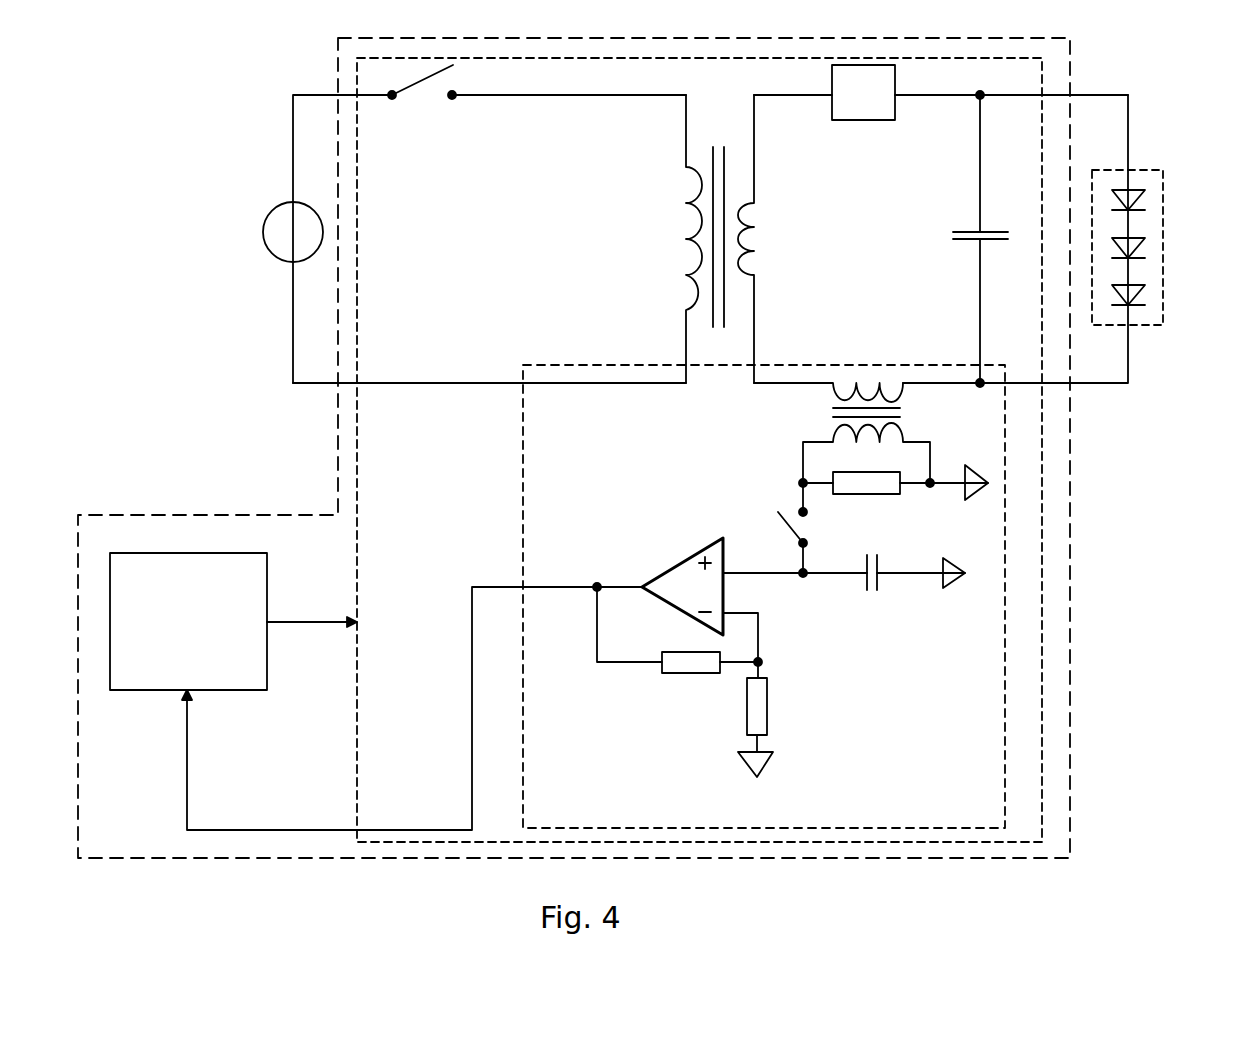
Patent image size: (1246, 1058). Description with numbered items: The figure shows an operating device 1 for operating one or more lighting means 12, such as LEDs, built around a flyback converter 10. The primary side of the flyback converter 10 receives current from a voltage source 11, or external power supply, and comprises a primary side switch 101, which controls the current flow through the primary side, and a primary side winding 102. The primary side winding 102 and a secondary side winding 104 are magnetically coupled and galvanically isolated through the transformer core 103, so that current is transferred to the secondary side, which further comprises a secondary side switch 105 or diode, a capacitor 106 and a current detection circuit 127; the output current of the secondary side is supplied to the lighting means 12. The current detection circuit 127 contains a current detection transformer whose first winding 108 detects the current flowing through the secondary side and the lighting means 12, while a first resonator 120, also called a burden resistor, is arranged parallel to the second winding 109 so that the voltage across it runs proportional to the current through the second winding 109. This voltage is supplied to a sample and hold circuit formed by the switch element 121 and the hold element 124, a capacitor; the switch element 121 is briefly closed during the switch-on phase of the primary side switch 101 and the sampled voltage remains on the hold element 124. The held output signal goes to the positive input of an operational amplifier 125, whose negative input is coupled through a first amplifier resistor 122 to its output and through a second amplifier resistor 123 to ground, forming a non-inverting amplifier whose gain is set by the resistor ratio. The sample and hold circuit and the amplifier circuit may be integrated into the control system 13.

The operating device 1 is at (1070, 75).
The flyback converter 10 is at (357, 167).
The voltage source 11 is at (263, 230).
The lighting means 12 is at (1128, 170).
The control system 13 is at (155, 690).
The primary side switch 101 is at (402, 95).
The primary side winding 102 is at (700, 180).
The transformer core 103 is at (720, 138).
The secondary side winding 104 is at (755, 223).
The secondary side switch 105 is at (847, 120).
The capacitor 106 is at (965, 237).
The first winding 108 is at (833, 387).
The second winding 109 is at (833, 430).
The first resonator 120 is at (877, 494).
The switch element 121 is at (782, 517).
The first amplifier resistor 122 is at (690, 673).
The second amplifier resistor 123 is at (773, 723).
The hold element 124 is at (877, 590).
The operational amplifier 125 is at (683, 557).
The current detection circuit 127 is at (888, 363).